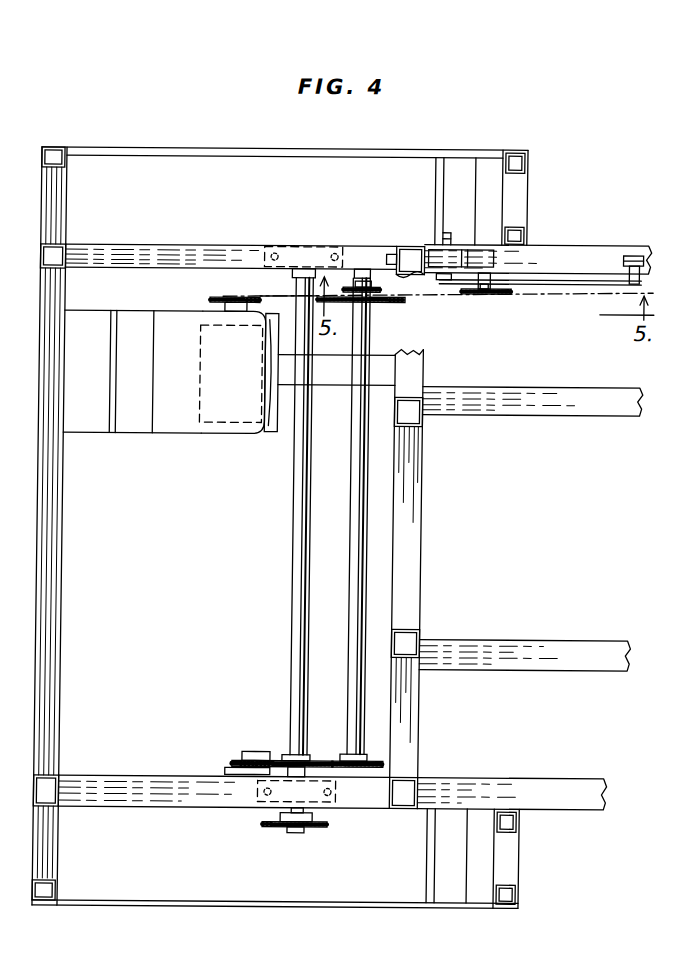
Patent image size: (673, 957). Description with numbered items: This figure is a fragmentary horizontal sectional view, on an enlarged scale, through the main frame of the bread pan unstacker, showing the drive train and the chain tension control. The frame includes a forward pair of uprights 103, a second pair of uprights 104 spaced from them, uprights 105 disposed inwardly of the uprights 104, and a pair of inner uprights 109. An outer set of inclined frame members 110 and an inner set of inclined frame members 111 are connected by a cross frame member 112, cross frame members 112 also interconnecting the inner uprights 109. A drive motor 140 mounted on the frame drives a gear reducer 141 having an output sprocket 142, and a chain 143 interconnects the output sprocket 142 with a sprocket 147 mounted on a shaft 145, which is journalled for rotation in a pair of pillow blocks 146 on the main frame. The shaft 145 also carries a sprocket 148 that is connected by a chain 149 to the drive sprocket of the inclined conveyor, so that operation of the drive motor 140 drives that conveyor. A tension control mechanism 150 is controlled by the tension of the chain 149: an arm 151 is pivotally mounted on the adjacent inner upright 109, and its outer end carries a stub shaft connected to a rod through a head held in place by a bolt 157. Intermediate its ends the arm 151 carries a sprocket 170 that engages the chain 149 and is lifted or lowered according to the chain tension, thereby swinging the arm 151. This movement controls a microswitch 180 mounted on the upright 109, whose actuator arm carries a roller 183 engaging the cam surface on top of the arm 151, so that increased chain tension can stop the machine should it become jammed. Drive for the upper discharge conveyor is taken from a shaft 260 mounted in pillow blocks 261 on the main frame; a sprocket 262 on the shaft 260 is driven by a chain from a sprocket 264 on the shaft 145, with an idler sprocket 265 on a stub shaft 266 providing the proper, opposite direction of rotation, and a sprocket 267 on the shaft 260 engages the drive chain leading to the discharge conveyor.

The uprights 103 is at (52, 147).
The uprights 104 is at (520, 149).
The uprights 105 is at (527, 234).
The inner uprights 109 is at (72, 244).
The outer inclined frame members 110 is at (581, 242).
The inner inclined frame members 111 is at (536, 402).
The cross frame member 112 is at (177, 244).
The drive motor 140 is at (164, 444).
The gear reducer 141 is at (241, 434).
The output sprocket 142 is at (212, 298).
The chain 143 is at (282, 293).
The shaft 145 is at (354, 552).
The pillow blocks 146 is at (377, 266).
The sprocket 147 is at (393, 301).
The sprocket 148 is at (353, 284).
The chain 149 is at (421, 291).
The tension control mechanism 150 is at (464, 312).
The arm 151 is at (558, 291).
The bolt 157 is at (631, 253).
The sprocket 170 is at (488, 292).
The microswitch 180 is at (479, 254).
The roller 183 is at (493, 283).
The shaft 260 is at (300, 638).
The pillow blocks 261 is at (277, 806).
The sprocket 262 is at (295, 752).
The sprocket 264 is at (339, 752).
The idler sprocket 265 is at (251, 753).
The stub shaft 266 is at (234, 770).
The sprocket 267 is at (281, 830).